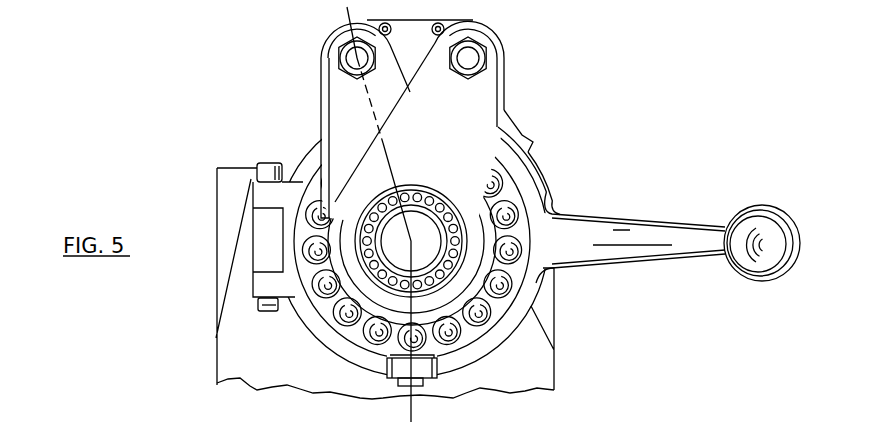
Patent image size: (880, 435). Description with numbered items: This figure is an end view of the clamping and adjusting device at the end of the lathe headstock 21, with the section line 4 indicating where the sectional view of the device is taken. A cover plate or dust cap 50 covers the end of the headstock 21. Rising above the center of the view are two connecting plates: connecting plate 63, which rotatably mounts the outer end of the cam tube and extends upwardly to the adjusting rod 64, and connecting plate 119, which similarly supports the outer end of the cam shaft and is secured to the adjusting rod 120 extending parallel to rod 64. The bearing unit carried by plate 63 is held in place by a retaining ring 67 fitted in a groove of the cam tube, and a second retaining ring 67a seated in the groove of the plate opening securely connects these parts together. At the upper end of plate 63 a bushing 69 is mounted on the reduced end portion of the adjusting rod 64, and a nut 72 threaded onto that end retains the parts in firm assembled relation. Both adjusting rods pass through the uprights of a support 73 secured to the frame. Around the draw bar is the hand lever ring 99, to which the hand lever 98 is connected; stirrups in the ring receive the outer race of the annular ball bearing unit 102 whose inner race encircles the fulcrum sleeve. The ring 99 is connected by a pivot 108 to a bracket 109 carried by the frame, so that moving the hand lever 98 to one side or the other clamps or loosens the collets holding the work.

The section line 4 is at (347, 7).
The headstock 21 is at (541, 375).
The cover plate or dust cap 50 is at (231, 351).
The connecting plate 63 is at (345, 112).
The adjusting rod 64 is at (350, 58).
The retaining ring 67 is at (411, 200).
The second retaining ring 67a is at (440, 208).
The bushing 69 is at (338, 43).
The nut 72 is at (340, 78).
The support 73 is at (522, 134).
The hand lever 98 is at (690, 243).
The hand lever ring 99 is at (528, 196).
The annular ball bearing unit 102 is at (340, 313).
The pivot 108 is at (268, 164).
The bracket 109 is at (265, 247).
The connecting plate 119 is at (475, 98).
The adjusting rod 120 is at (467, 58).